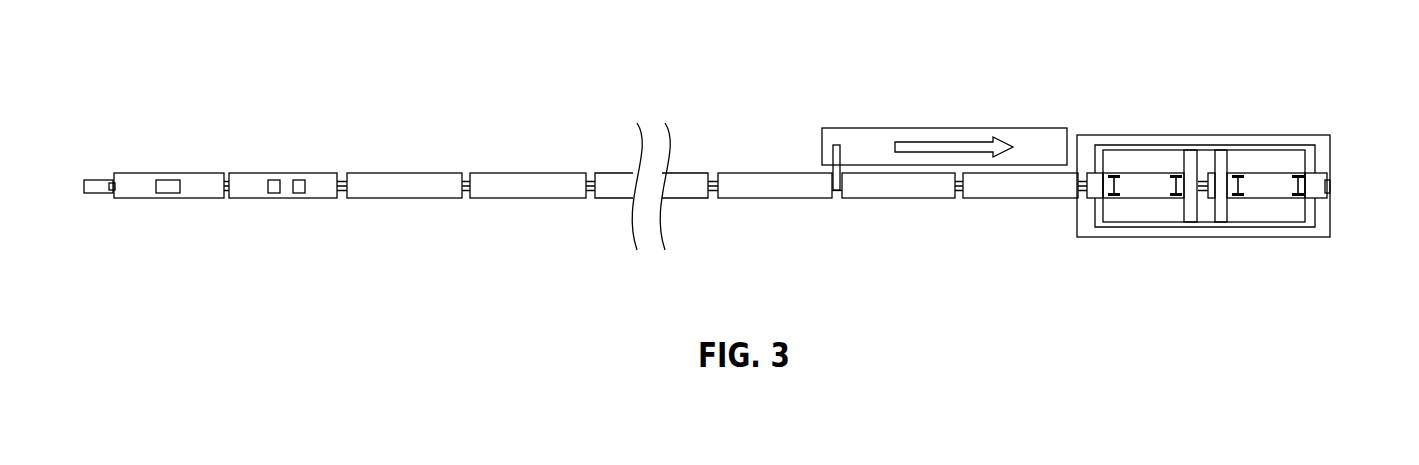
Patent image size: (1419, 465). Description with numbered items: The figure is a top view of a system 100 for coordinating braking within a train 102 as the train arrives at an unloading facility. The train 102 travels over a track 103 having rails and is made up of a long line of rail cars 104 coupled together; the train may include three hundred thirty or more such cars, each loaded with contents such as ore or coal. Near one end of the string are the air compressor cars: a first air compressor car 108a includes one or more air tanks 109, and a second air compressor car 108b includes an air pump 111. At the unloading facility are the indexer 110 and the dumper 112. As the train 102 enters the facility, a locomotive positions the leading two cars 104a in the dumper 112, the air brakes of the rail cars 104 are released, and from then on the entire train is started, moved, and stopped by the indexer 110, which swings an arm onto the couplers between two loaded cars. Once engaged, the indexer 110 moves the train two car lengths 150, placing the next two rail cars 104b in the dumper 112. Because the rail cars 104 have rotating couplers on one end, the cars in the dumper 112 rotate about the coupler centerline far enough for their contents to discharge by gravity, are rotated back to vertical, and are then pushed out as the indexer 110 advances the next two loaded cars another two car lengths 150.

The system 100 is at (176, 64).
The train 102 is at (401, 95).
The track 103 is at (93, 197).
The rail cars 104 is at (408, 173).
The leading two cars 104a is at (1142, 198).
The next two rail cars 104b is at (895, 200).
The first air compressor car 108a is at (257, 173).
The second air compressor car 108b is at (140, 173).
The air tanks 109 is at (274, 197).
The indexer 110 is at (837, 145).
The air pump 111 is at (168, 198).
The dumper 112 is at (1200, 143).
The two car lengths 150 is at (955, 140).